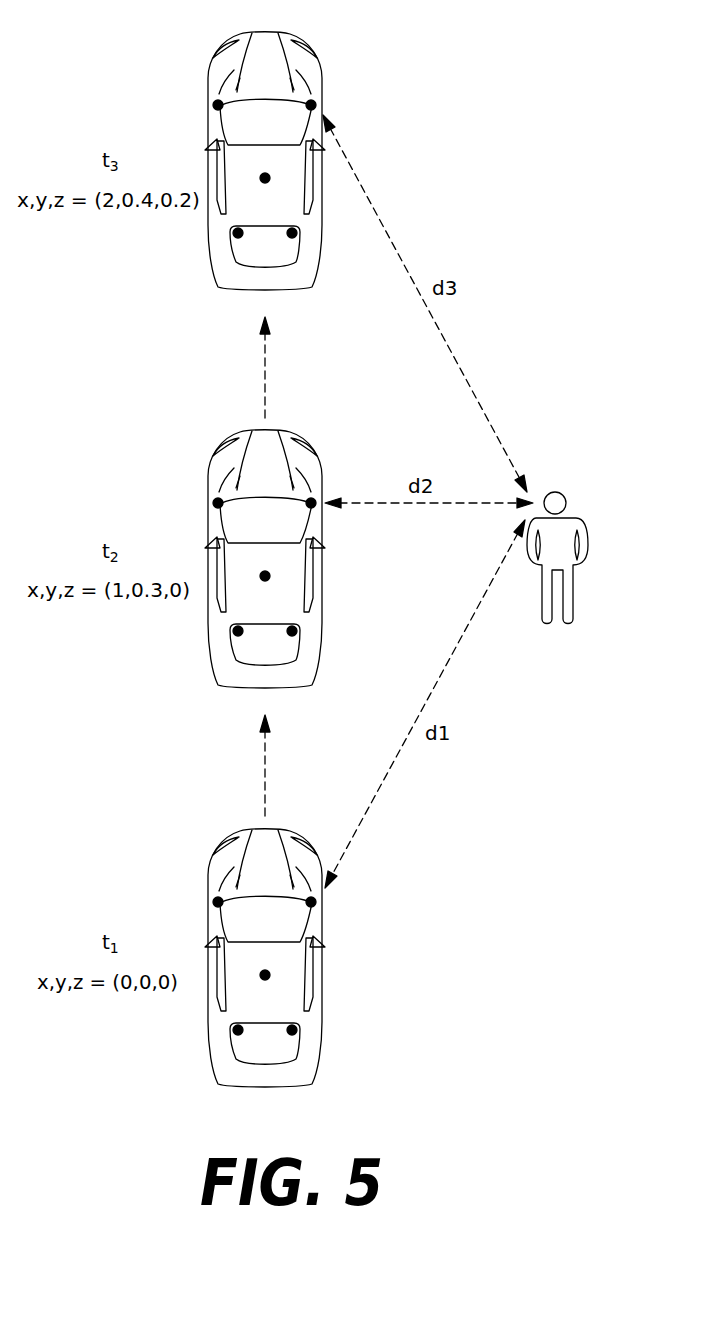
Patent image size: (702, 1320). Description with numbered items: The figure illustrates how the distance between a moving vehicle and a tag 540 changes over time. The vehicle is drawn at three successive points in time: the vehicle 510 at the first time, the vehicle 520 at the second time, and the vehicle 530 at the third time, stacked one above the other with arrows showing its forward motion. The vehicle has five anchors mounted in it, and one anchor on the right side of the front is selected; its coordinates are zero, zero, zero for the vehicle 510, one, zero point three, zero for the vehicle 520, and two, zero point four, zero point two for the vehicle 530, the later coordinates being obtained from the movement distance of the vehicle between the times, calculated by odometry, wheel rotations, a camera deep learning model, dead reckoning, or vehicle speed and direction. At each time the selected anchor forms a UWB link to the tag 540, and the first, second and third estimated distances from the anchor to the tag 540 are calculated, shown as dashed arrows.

The vehicle 510 is at (210, 866).
The vehicle 520 is at (210, 475).
The vehicle 530 is at (210, 83).
The tag 540 is at (558, 491).